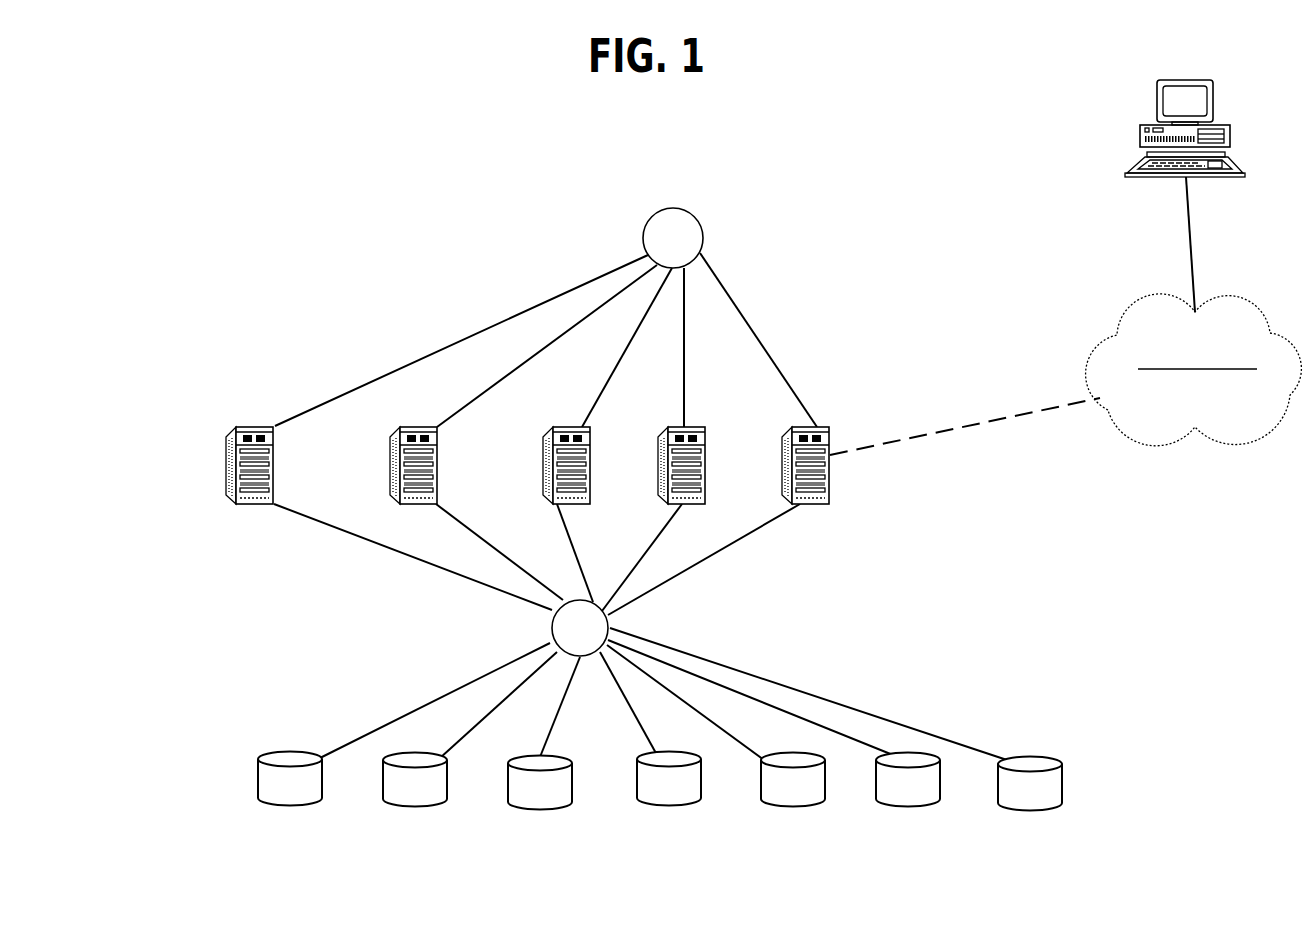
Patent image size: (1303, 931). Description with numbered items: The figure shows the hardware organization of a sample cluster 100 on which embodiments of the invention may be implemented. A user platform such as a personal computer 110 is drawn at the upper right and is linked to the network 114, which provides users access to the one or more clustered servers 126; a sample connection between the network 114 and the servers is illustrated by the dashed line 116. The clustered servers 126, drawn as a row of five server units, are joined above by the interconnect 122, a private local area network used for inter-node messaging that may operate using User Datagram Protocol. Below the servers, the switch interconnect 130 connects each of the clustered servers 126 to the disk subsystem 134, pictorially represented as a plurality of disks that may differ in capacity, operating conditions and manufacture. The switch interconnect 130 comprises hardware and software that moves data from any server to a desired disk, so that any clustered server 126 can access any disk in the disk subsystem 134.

The cluster 100 is at (252, 196).
The client computer 110 is at (1140, 128).
The network 114 is at (1214, 396).
The dashed line 116 is at (945, 430).
The interconnect 122 is at (689, 249).
The clustered servers 126 is at (226, 465).
The switch interconnect 130 is at (596, 639).
The disk subsystem 134 is at (262, 756).